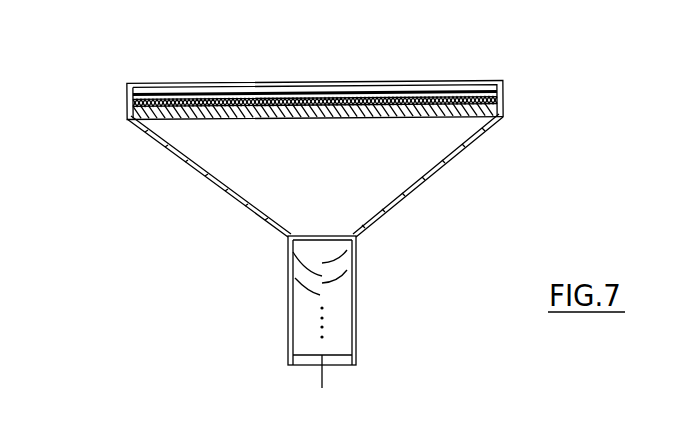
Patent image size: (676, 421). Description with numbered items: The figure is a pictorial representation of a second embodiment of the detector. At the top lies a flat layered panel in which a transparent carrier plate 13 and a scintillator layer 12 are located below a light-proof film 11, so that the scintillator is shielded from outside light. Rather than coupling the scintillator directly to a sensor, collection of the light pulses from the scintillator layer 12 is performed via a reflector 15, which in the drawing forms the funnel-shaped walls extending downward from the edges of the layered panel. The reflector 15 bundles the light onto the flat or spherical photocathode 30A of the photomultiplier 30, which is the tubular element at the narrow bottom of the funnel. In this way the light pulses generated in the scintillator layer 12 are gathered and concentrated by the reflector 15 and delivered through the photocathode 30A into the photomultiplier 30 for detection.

The light-proof film 11 is at (263, 86).
The scintillator layer 12 is at (133, 104).
The transparent carrier plate 13 is at (497, 108).
The reflector 15 is at (420, 178).
The photomultiplier 30 is at (356, 326).
The photocathode 30A is at (296, 242).